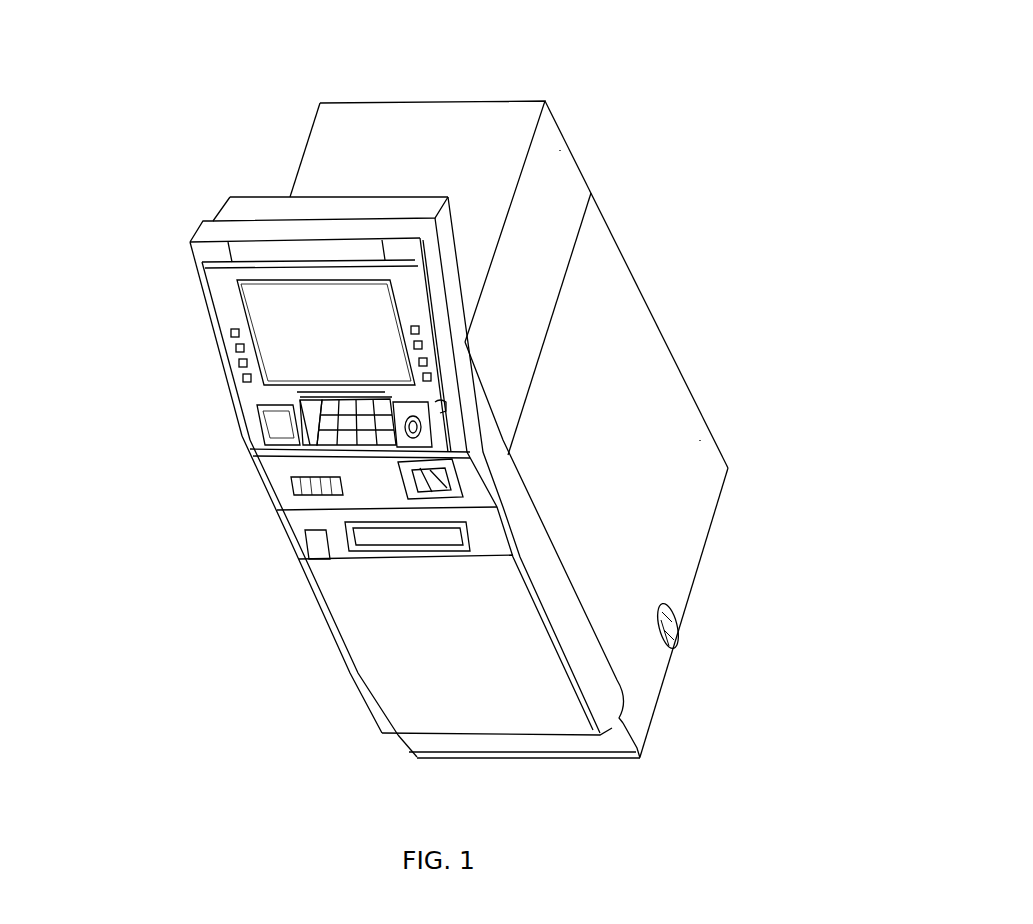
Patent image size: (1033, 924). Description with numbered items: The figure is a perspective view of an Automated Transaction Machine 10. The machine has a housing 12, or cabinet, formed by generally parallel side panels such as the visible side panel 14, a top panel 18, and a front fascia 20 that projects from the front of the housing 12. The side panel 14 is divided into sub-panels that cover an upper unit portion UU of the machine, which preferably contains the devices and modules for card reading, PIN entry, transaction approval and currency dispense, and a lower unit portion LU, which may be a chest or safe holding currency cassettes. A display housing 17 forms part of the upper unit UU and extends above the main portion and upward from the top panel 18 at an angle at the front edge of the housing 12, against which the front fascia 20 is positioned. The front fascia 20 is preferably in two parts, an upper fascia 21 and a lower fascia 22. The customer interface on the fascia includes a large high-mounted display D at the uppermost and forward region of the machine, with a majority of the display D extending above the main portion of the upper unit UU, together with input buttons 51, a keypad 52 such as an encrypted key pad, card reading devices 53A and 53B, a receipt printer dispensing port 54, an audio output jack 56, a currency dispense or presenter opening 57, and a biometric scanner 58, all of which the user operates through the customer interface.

The Automated Transaction Machine 10 is at (108, 108).
The housing 12 is at (676, 306).
The side panel 14 is at (668, 512).
The display housing 17 is at (248, 210).
The top panel 18 is at (468, 133).
The front fascia 20 is at (340, 538).
The upper fascia 21 is at (336, 465).
The lower fascia 22 is at (338, 679).
The input buttons 51 is at (233, 330).
The keypad 52 is at (320, 449).
The card reading device 53A is at (458, 480).
The card reading device 53B is at (258, 432).
The receipt printer dispensing port 54 is at (298, 487).
The audio output jack 56 is at (438, 408).
The currency dispense or presenter opening 57 is at (438, 548).
The biometric scanner 58 is at (430, 437).
The display D is at (326, 332).
The upper unit portion UU is at (604, 138).
The lower unit portion LU is at (724, 398).